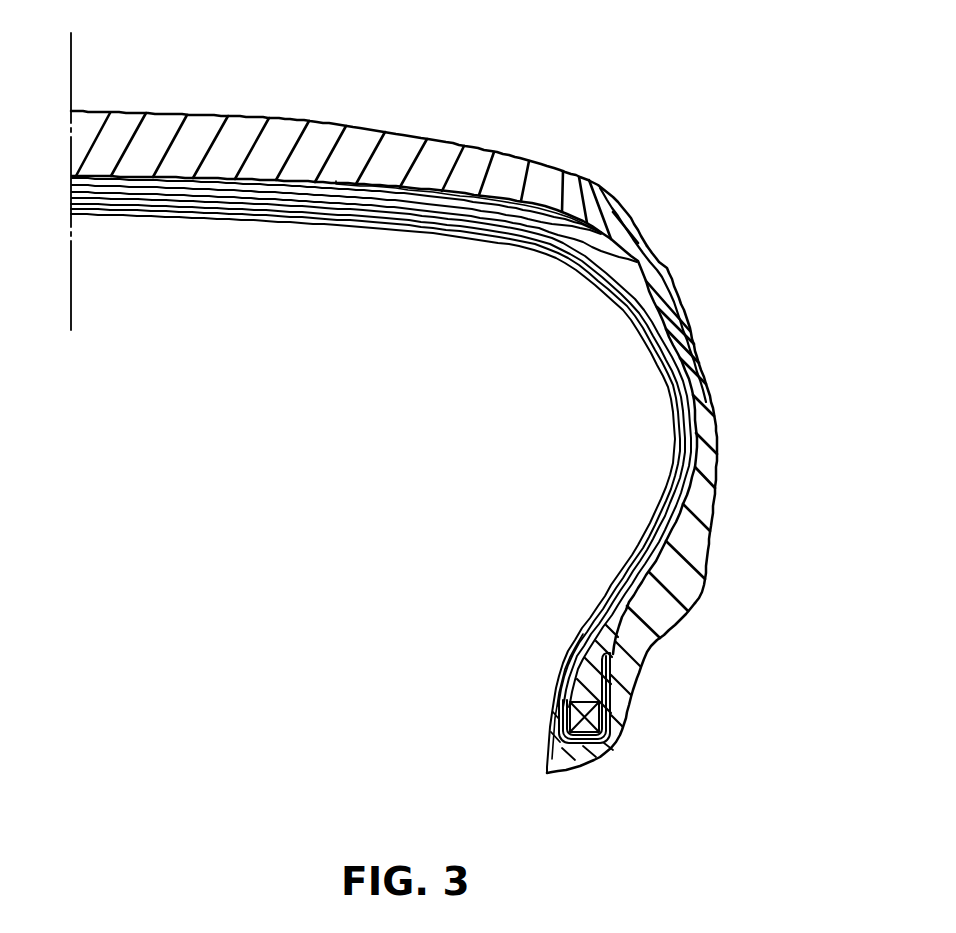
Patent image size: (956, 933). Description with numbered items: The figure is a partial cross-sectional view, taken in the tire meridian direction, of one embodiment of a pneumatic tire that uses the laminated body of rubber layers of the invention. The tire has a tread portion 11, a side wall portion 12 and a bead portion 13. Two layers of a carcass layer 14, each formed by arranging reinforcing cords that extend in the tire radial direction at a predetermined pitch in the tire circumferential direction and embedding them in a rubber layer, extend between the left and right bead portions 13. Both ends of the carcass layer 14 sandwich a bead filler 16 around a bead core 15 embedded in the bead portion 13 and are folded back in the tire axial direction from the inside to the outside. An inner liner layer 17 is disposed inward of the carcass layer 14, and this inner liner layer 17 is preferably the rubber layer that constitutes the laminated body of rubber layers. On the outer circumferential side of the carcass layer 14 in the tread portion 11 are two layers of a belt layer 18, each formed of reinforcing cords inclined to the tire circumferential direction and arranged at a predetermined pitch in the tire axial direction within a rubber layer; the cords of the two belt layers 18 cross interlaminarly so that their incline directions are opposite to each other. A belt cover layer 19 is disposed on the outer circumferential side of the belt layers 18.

The tread portion 11 is at (243, 112).
The side wall portion 12 is at (717, 429).
The bead portion 13 is at (627, 735).
The carcass layer 14 is at (675, 365).
The bead core 15 is at (597, 720).
The bead filler 16 is at (620, 627).
The inner liner layer 17 is at (668, 393).
The belt layer 18 is at (192, 193).
The belt cover layer 19 is at (387, 185).